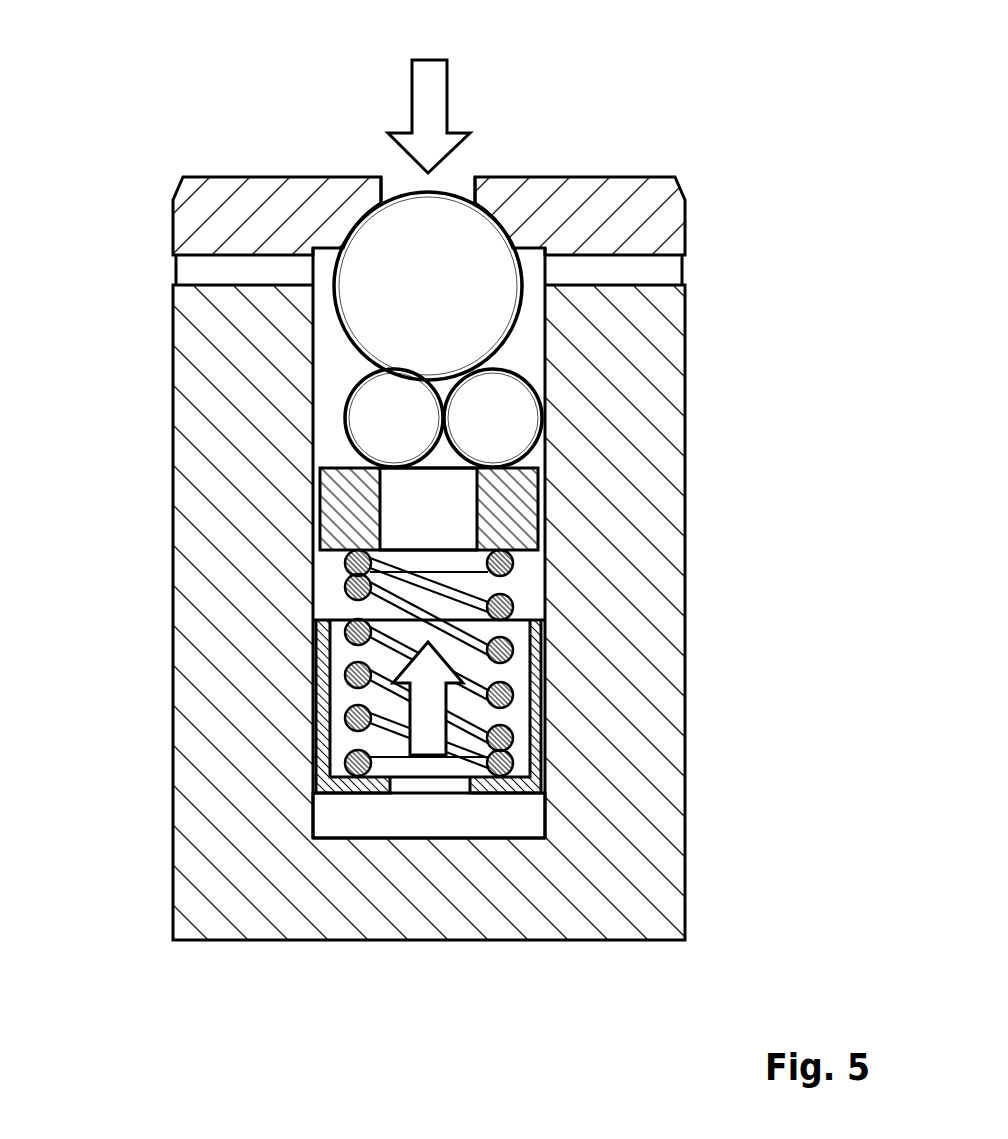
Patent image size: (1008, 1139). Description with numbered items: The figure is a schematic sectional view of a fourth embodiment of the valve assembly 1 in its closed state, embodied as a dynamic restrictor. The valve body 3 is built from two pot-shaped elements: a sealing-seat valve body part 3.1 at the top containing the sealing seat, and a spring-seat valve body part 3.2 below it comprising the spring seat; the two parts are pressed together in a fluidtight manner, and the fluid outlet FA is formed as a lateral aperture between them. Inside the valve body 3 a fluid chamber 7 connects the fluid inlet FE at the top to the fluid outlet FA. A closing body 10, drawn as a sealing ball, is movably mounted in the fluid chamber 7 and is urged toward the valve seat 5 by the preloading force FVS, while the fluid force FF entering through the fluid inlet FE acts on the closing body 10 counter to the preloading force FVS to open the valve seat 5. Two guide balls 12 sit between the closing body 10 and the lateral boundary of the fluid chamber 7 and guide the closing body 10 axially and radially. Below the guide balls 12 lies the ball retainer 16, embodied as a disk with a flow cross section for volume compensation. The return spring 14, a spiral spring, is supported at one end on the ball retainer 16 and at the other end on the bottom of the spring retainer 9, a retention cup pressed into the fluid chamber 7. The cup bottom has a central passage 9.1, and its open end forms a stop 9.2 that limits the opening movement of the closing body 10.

The valve assembly 1 is at (146, 108).
The valve body 3 is at (513, 558).
The sealing-seat valve body part 3.1 is at (657, 215).
The spring-seat valve body part 3.2 is at (653, 883).
The valve seat 5 is at (383, 233).
The fluid chamber 7 is at (323, 349).
The spring retainer 9 is at (535, 703).
The central passage 9.1 is at (428, 783).
The stop 9.2 is at (321, 611).
The closing body 10 is at (482, 235).
The guide ball 12 is at (350, 417).
The return spring 14 is at (512, 650).
The ball retainer 16 is at (350, 508).
The fluid outlet FA is at (187, 268).
The fluid inlet FE is at (393, 190).
The fluid force FF is at (430, 78).
The preloading force FVS is at (425, 707).